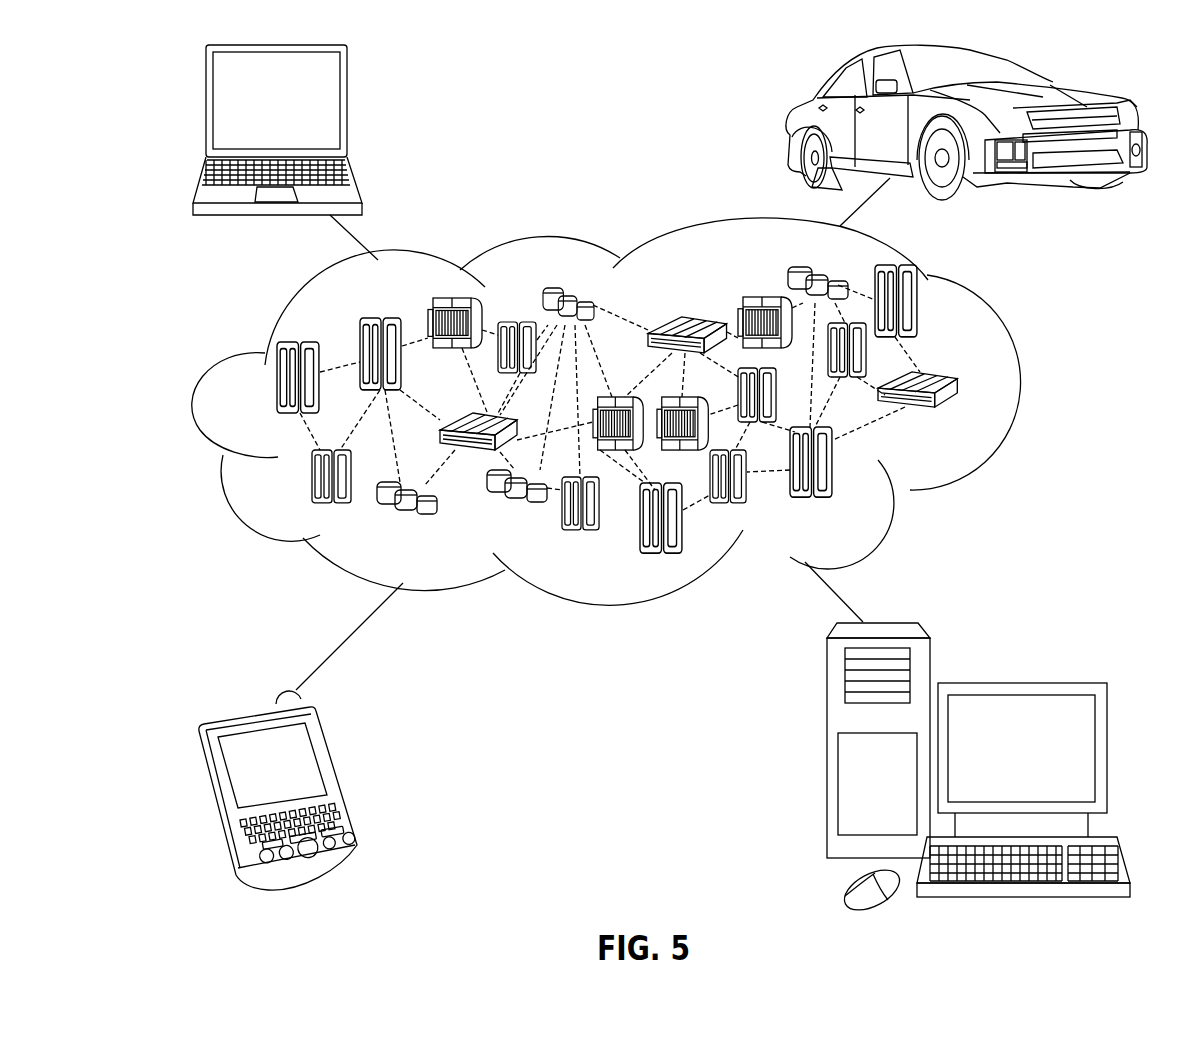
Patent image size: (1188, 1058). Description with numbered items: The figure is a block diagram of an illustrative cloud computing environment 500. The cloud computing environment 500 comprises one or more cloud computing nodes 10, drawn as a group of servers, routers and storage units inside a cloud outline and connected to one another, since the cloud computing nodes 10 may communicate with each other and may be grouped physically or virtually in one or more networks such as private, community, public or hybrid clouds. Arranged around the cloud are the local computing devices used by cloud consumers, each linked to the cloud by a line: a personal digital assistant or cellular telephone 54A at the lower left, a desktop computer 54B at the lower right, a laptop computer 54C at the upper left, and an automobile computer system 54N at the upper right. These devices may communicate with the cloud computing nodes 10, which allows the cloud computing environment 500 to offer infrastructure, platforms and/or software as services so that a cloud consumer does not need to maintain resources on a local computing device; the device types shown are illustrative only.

The cloud computing environment 500 is at (1018, 390).
The cloud computing nodes 10 is at (972, 420).
The personal digital assistant (PDA) or cellular telephone 54A is at (340, 779).
The desktop computer 54B is at (1017, 683).
The laptop computer 54C is at (349, 109).
The automobile computer system 54N is at (796, 126).